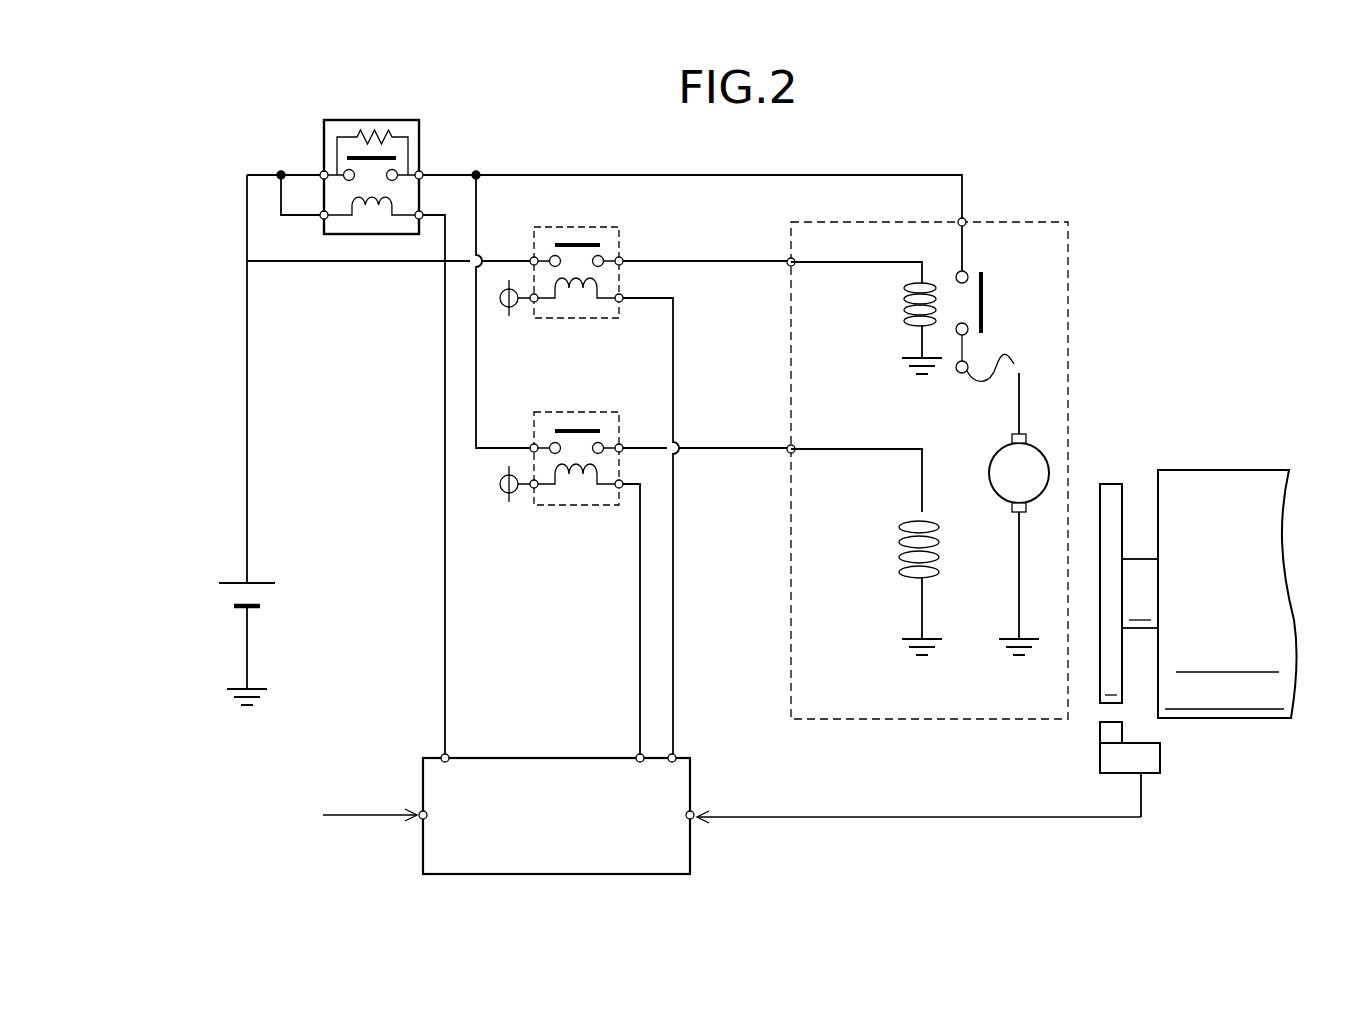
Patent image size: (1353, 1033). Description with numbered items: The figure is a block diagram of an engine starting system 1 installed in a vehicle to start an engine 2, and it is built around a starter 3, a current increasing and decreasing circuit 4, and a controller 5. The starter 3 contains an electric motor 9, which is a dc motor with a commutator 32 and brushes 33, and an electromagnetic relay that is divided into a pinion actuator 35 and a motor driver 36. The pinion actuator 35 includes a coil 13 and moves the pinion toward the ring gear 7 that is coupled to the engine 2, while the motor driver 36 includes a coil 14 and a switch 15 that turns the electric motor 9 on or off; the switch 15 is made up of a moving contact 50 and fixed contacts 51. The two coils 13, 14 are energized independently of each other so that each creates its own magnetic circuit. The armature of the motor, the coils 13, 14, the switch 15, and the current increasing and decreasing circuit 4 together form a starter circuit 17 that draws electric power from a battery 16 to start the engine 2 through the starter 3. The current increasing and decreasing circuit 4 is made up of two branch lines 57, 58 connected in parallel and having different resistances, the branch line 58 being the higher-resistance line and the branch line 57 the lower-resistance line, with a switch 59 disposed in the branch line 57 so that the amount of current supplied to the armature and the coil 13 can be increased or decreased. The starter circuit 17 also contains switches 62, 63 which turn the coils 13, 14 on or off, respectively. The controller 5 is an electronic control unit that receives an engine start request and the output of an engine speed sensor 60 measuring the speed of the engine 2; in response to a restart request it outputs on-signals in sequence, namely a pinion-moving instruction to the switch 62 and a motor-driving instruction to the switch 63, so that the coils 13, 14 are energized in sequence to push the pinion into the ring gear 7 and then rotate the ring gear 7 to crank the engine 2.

The engine starting system 1 is at (1222, 200).
The engine 2 is at (1238, 476).
The starter 3 is at (1075, 250).
The current increasing and decreasing circuit 4 is at (425, 123).
The controller 5 is at (683, 783).
The ring gear 7 is at (1108, 489).
The electric motor 9 is at (981, 450).
The coil 13 is at (898, 532).
The coil 14 is at (903, 292).
The switch 15 is at (983, 178).
The battery 16 is at (230, 581).
The starter circuit 17 is at (220, 148).
The commutator 32 is at (1038, 462).
The brushes 33 is at (1027, 440).
The pinion actuator 35 is at (888, 565).
The motor driver 36 is at (1017, 308).
The moving contact 50 is at (983, 305).
The fixed contacts 51 is at (966, 273).
The branch line 57 is at (403, 171).
The branch line 58 is at (347, 137).
The switch 59 is at (329, 194).
The engine speed sensor 60 is at (1143, 741).
The switch 62 is at (563, 410).
The switch 63 is at (623, 232).